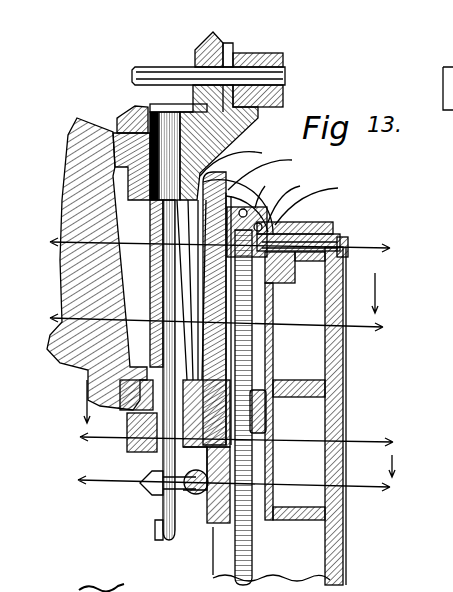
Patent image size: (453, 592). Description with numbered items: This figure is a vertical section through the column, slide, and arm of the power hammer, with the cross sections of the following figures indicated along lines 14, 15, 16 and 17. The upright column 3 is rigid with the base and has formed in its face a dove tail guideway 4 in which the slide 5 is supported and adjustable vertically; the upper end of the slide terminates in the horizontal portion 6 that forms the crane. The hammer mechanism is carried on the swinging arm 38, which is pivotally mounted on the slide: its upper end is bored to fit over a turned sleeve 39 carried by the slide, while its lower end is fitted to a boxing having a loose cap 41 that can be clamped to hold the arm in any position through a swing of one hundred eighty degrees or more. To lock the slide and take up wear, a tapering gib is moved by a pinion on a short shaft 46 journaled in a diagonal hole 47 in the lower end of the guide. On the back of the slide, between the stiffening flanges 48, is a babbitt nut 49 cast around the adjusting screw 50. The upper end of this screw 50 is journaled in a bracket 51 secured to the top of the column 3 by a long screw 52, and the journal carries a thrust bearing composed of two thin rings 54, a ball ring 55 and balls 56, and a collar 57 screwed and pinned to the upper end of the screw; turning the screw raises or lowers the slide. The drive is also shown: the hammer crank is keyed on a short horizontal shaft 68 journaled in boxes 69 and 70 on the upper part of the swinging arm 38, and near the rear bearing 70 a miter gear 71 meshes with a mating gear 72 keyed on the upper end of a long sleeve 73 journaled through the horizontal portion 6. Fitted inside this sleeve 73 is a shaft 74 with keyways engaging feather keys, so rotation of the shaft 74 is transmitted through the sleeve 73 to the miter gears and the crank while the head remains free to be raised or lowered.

The column 3 is at (348, 553).
The dove tail guideway 4 is at (212, 540).
The slide 5 is at (267, 442).
The horizontal portion 6 is at (220, 180).
The section line 14— 14 is at (220, 246).
The section line 15— 15 is at (220, 305).
The section line 16— 16 is at (234, 418).
The section line 17— 17 is at (232, 478).
The swinging arm 38 is at (110, 137).
The turned sleeve 39 is at (233, 140).
The loose cap 41 is at (130, 448).
The short shaft 46 is at (200, 500).
The diagonal hole 47 is at (148, 484).
The flanges 48 is at (267, 354).
The nut 49 is at (264, 412).
The adjusting screw 50 is at (254, 310).
The bracket 51 is at (288, 226).
The long screw 52 is at (384, 230).
The thin rings 54 is at (296, 197).
The ball ring 55 is at (320, 200).
The balls 56 is at (302, 236).
The collar 57 is at (270, 177).
The short horizontal shaft 68 is at (157, 75).
The box 69 is at (260, 62).
The rear bearing 70 is at (234, 55).
The miter gear 71 is at (219, 44).
The mating gear 72 is at (131, 113).
The long sleeve 73 is at (160, 218).
The shaft 74 is at (152, 528).